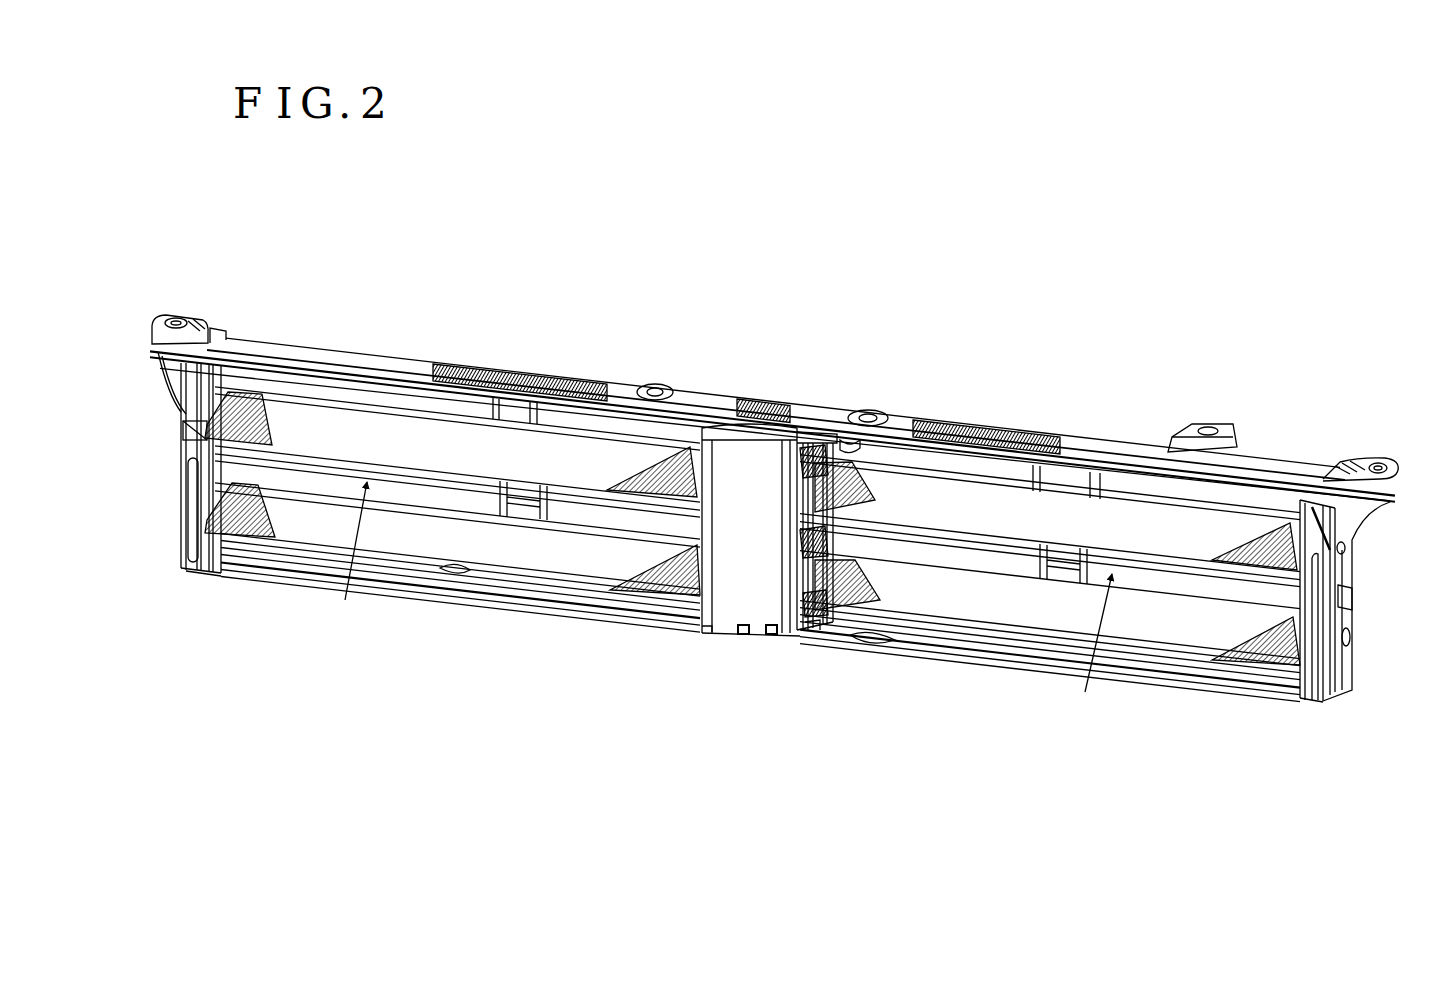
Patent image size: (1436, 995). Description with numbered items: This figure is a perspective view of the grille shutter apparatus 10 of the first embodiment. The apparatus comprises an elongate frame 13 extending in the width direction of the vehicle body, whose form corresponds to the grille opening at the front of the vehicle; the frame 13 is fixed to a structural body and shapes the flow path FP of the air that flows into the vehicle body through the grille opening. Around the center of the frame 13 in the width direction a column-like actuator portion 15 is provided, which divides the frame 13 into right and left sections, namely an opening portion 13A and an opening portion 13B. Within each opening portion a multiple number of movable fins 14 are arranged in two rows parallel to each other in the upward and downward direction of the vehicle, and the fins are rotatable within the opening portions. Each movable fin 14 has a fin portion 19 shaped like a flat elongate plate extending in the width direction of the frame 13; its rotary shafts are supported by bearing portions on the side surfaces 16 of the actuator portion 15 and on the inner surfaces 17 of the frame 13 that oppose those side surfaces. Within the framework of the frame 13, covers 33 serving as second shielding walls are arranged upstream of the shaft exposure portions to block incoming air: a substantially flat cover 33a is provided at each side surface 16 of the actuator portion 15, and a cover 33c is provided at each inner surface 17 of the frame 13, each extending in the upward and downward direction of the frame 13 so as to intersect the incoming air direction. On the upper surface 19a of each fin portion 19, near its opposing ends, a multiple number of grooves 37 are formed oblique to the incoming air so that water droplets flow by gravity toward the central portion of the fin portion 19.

The grille shutter apparatus 10 is at (205, 240).
The frame 13 is at (774, 417).
The opening portion 13A is at (844, 442).
The opening portion 13B is at (636, 421).
The movable fin 14 is at (757, 459).
The fin portion 19 is at (1152, 580).
The upper surface 19a is at (473, 453).
The cover 33 is at (769, 532).
The cover 33a is at (717, 490).
The cover 33c is at (769, 527).
The groove 37 is at (276, 428).
The inner surface 17 is at (190, 468).
The actuator portion 15 is at (753, 638).
The side surface 16 is at (708, 634).
The flow path FP is at (356, 627).